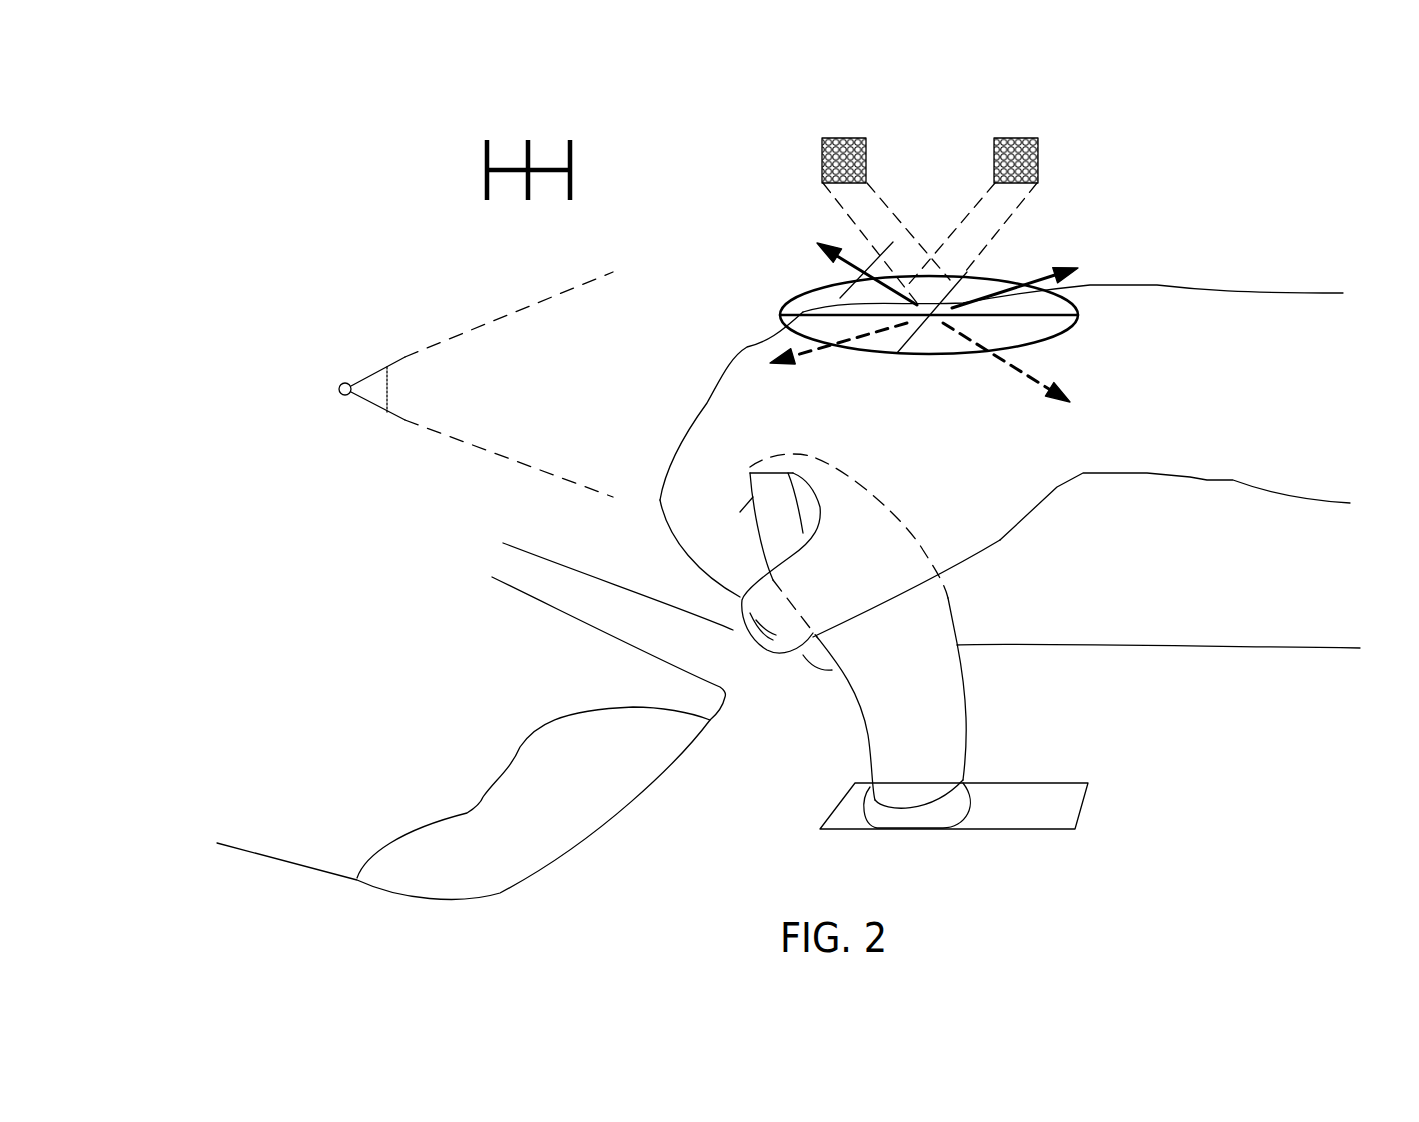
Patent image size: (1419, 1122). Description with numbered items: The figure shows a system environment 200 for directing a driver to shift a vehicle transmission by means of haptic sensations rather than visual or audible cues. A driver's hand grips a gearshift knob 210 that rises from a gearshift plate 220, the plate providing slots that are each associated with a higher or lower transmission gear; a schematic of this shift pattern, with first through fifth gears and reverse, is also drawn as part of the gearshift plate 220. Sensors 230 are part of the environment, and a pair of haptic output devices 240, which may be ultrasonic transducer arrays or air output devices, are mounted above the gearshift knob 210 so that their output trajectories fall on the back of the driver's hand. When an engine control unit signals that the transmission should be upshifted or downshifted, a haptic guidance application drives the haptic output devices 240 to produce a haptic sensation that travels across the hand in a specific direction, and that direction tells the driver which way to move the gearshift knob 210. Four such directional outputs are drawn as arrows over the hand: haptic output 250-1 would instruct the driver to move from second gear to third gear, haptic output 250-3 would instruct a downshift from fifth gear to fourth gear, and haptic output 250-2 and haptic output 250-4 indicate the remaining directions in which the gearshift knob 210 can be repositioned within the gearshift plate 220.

The system environment 200 is at (1240, 218).
The gearshift knob 210 is at (967, 690).
The gearshift plate 220 is at (1082, 807).
The sensors 230 is at (341, 384).
The haptic output devices 240 is at (841, 138).
The haptic output 250-1 is at (847, 265).
The haptic output 250-2 is at (807, 354).
The haptic output 250-3 is at (1023, 373).
The haptic output 250-4 is at (1043, 277).